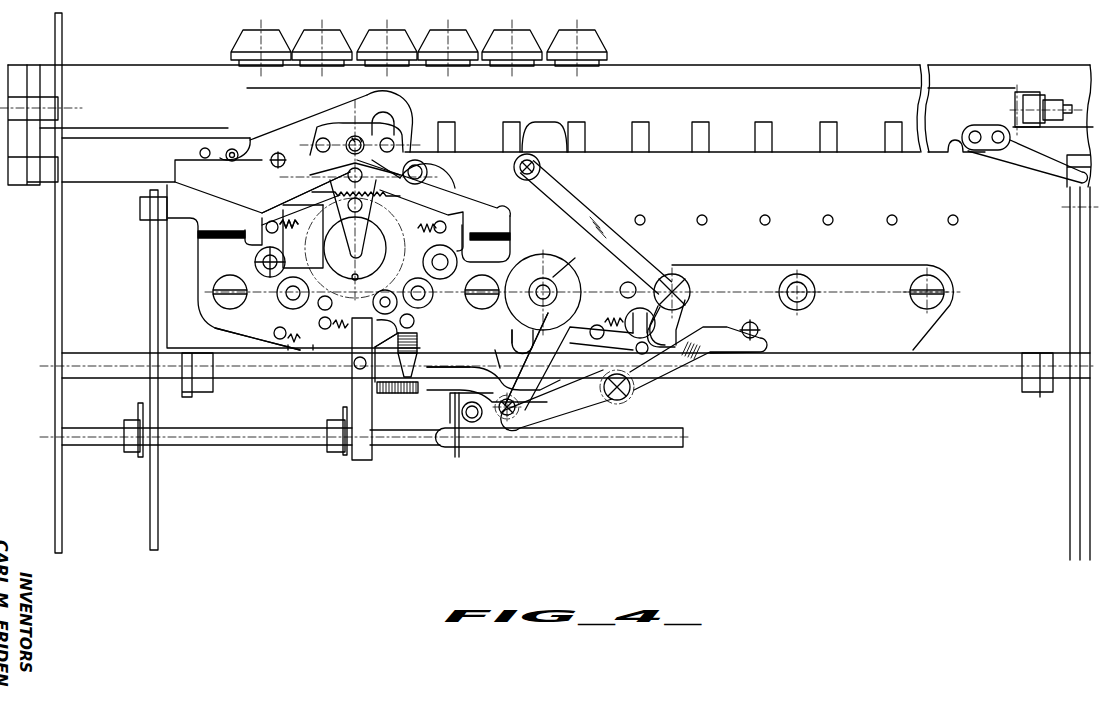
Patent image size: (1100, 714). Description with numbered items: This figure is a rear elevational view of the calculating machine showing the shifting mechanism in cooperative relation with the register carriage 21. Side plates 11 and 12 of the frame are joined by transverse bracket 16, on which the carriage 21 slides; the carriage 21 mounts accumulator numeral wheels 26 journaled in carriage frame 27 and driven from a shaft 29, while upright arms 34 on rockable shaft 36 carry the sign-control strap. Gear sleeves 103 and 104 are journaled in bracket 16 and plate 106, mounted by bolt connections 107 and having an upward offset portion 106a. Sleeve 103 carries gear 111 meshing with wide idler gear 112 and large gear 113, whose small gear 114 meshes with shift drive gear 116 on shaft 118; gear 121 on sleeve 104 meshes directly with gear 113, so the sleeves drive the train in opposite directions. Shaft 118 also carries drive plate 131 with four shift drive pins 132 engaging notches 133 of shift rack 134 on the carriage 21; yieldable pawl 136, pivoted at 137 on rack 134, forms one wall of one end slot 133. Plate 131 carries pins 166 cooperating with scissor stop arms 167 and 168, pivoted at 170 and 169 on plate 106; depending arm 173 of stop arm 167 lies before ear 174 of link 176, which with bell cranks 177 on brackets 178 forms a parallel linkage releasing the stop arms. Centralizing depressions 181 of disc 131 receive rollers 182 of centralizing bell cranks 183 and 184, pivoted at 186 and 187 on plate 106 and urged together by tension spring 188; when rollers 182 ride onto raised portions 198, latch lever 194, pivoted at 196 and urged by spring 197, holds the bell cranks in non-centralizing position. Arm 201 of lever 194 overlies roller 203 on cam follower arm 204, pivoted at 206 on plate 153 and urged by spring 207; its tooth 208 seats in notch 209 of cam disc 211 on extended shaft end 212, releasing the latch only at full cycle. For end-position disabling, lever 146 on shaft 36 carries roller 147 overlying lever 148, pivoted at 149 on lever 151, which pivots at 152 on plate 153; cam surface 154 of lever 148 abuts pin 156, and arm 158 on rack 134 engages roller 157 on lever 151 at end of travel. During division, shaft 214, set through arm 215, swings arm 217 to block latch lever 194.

The carriage frame 27 is at (112, 66).
The numeral wheels 26 is at (500, 38).
The shift rack 134 is at (677, 93).
The shiftable register carriage 21 is at (805, 63).
The notches 133 is at (535, 128).
The arm 158 is at (1022, 166).
The side plate 11 is at (1080, 441).
The upright arms 34 is at (190, 395).
The transverse rockable shaft 36 is at (232, 380).
The shaft 214 is at (250, 447).
The lever 148 is at (567, 448).
The arm 215 is at (137, 408).
The arm 217 is at (342, 410).
The side plate 12 is at (158, 486).
The latch lever 194 is at (353, 462).
The lever 146 is at (455, 446).
The roller 147 is at (473, 423).
The roller 203 is at (508, 420).
The arm 201 is at (520, 395).
The cam follower arm 204 is at (597, 368).
The pivot 149 is at (625, 401).
The cam surface 154 is at (745, 325).
The pin 156 is at (760, 333).
The plate 153 is at (760, 265).
The transverse bracket 16 is at (945, 345).
The pivot 152 is at (682, 276).
The pivot 206 is at (670, 275).
The shaft 29 is at (890, 218).
The roller 157 is at (542, 167).
The lever 151 is at (593, 214).
The cam disc 211 is at (546, 284).
The extended end 212 is at (579, 259).
The spring 207 is at (620, 292).
The tooth 208 is at (625, 318).
The notch 209 is at (543, 326).
The brackets 178 is at (540, 392).
The plate 106 is at (505, 248).
The upward offset portion 106a is at (480, 213).
The pivot 187 is at (457, 260).
The gear sleeve 104 is at (433, 298).
The pivot 170 is at (387, 290).
The small gear 114 is at (370, 254).
The gear sleeve 103 is at (280, 295).
The bolt connections 107 is at (212, 283).
The pivot 186 is at (258, 260).
The centralizing bell crank 183 is at (265, 227).
The large gear 113 is at (303, 234).
The pivot 169 is at (277, 331).
The gear 111 is at (236, 328).
The shaft 118 is at (348, 177).
The scissor lever 168 is at (380, 195).
The scissor lever 167 is at (305, 200).
The tension spring 188 is at (278, 212).
The shift drive gear 116 is at (350, 138).
The shift drive pins 132 is at (320, 138).
The raised portions 198 is at (398, 138).
The yieldable pawl 136 is at (380, 97).
The pins 166 is at (360, 138).
The centralizing depressions 181 is at (353, 138).
The drive plate 131 is at (250, 142).
The pivot 137 is at (271, 161).
The rollers 182 is at (430, 172).
The centralizing bell crank 184 is at (447, 184).
The spring 197 is at (288, 345).
The wide idler gear 112 is at (313, 345).
The pivot 196 is at (336, 345).
The gear 121 is at (425, 358).
The bell cranks 177 is at (497, 352).
The depending arm 173 is at (406, 380).
The ear 174 is at (383, 394).
The link 176 is at (443, 376).